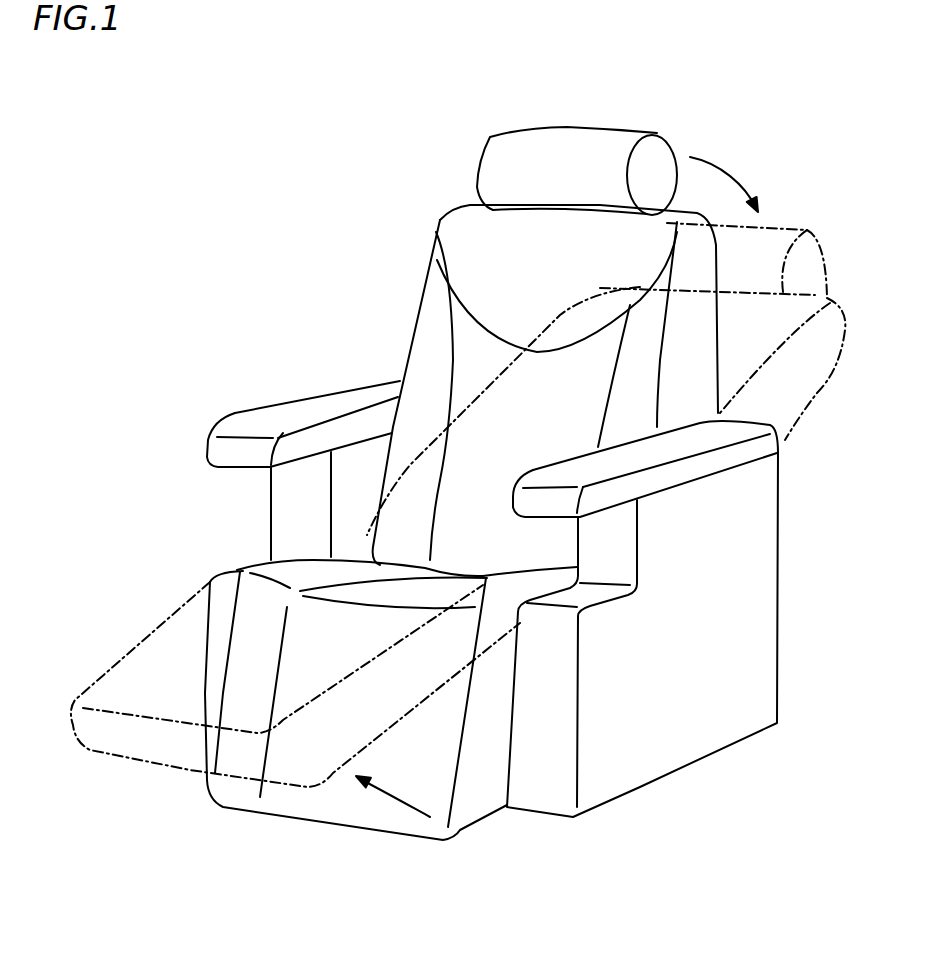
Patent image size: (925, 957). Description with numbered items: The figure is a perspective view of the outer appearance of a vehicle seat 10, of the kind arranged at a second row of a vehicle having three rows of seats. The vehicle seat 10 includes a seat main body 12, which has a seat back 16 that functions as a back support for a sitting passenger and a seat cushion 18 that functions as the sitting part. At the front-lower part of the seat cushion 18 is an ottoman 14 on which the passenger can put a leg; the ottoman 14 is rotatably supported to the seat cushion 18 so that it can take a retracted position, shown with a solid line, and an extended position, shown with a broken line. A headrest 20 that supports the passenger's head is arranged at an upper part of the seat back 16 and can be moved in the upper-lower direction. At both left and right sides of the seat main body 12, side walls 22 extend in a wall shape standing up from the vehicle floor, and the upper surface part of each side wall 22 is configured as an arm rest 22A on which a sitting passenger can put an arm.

The vehicle seat 10 is at (275, 268).
The seat main body 12 is at (407, 318).
The ottoman 14 is at (153, 748).
The seat back 16 is at (470, 252).
The seat cushion 18 is at (312, 563).
The headrest 20 is at (578, 148).
The side wall 22 is at (290, 508).
The arm rest 22A is at (280, 423).